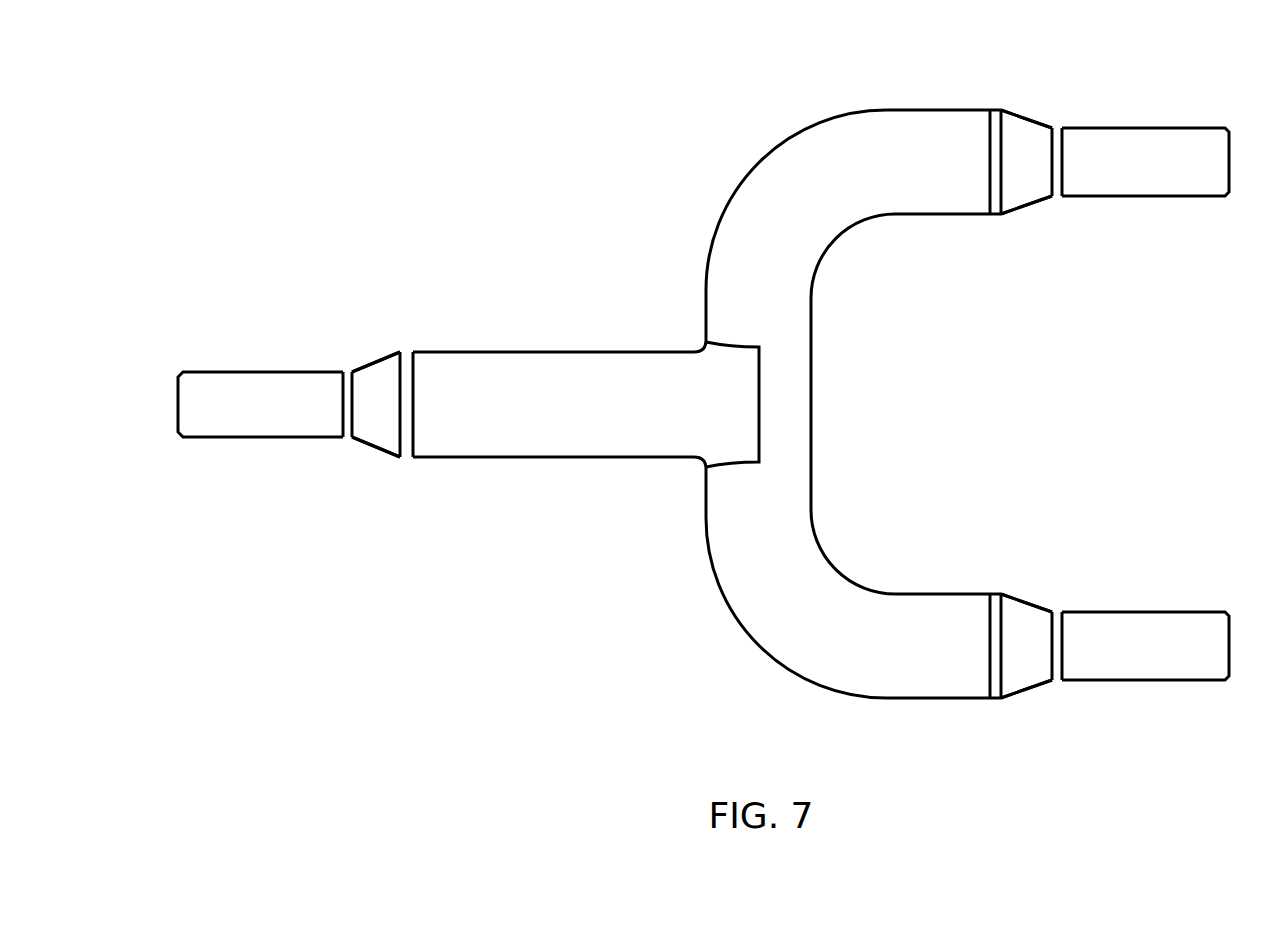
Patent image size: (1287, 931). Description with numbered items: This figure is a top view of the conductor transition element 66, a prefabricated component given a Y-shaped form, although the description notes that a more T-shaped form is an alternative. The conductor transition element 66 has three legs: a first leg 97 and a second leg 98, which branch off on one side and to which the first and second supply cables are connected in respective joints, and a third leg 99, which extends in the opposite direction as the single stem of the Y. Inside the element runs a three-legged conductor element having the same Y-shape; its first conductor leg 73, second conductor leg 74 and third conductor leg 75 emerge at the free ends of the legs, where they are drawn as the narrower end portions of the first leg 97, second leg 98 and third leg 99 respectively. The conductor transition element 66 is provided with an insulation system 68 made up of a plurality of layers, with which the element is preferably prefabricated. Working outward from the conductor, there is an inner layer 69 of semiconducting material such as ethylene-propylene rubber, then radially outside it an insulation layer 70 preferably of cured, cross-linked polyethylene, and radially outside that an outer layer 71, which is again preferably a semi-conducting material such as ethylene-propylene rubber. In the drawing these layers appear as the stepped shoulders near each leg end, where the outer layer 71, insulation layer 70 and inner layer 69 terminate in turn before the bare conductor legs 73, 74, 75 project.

The conductor transition element 66 is at (594, 234).
The insulation system 68 is at (766, 163).
The inner layer 69 is at (345, 370).
The insulation layer 70 is at (383, 360).
The outer layer 71 is at (402, 352).
The first conductor leg 73 is at (1140, 672).
The second conductor leg 74 is at (1148, 145).
The third conductor leg 75 is at (272, 427).
The first leg 97 is at (961, 582).
The second leg 98 is at (901, 227).
The third leg 99 is at (569, 342).